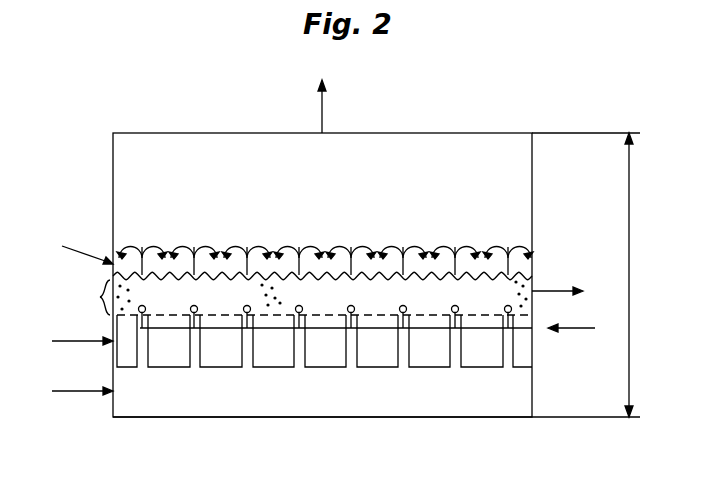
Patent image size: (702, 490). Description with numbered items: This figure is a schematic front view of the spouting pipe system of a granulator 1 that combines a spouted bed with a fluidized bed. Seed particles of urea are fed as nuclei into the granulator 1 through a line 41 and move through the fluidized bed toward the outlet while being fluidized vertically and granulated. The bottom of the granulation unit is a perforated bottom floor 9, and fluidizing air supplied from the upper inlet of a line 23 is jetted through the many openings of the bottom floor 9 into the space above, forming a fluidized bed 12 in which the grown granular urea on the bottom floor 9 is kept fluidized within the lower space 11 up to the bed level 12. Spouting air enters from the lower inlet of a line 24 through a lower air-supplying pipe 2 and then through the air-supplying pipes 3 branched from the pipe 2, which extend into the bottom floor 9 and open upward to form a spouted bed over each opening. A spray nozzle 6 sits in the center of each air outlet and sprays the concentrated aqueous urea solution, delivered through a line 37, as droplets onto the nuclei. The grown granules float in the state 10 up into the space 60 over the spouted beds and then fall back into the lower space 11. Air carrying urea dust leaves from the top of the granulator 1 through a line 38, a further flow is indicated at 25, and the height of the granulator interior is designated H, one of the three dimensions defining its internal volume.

The granulator 1 is at (532, 172).
The lower air-supplying pipe 2 is at (312, 418).
The air-supplying pipe 3 is at (262, 350).
The spray nozzle 6 is at (196, 318).
The bottom floor 9 is at (520, 306).
The state floating into the upper space 10 is at (140, 249).
The lower space 11 is at (477, 277).
The fluidized bed 12 is at (100, 298).
The line 23 is at (78, 345).
The line 24 is at (78, 395).
The outlet flow 25 is at (540, 291).
The line 37 is at (580, 330).
The line 38 is at (322, 105).
The line 41 is at (80, 255).
The space over the spouted beds 60 is at (165, 277).
The height H is at (593, 275).